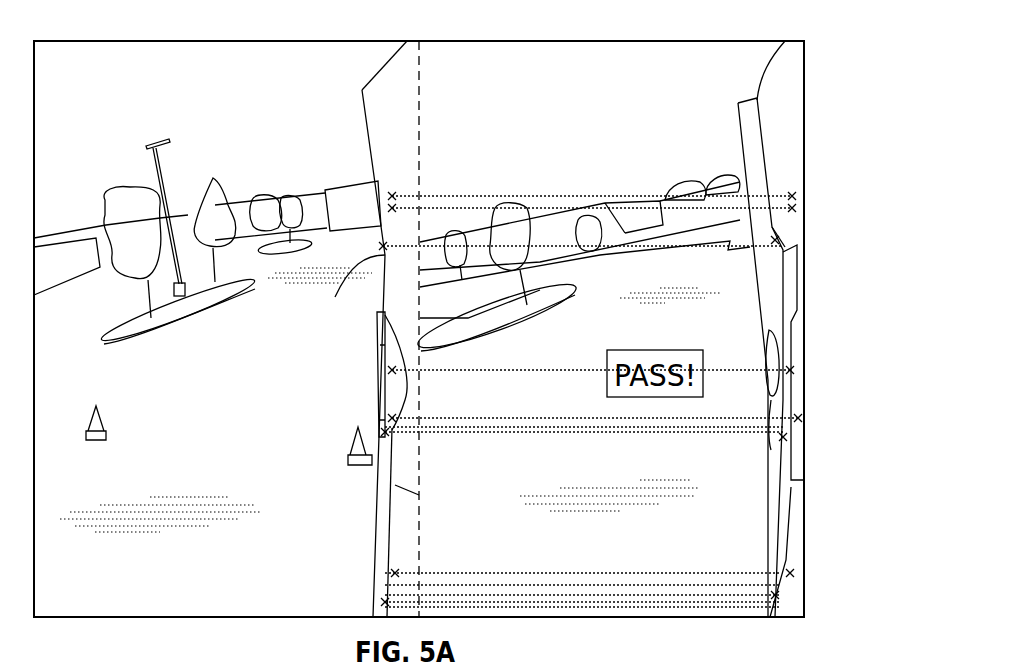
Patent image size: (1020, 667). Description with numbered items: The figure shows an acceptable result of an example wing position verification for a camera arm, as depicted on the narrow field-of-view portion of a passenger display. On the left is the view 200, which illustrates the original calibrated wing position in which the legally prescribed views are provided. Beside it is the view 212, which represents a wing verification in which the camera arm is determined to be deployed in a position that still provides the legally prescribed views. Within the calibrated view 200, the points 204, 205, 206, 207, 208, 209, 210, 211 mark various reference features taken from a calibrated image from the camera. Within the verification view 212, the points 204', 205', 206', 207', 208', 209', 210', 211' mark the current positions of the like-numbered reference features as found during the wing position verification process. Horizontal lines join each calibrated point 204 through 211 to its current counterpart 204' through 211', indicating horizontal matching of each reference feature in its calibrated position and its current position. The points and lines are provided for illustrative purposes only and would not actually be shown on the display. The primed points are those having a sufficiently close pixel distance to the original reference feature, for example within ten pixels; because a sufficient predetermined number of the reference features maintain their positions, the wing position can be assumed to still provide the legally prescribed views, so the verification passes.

The view 200 is at (116, 68).
The view 212 is at (598, 70).
The point 204 is at (353, 178).
The point 205 is at (434, 188).
The point 206 is at (333, 278).
The point 207 is at (354, 355).
The point 208 is at (354, 401).
The point 209 is at (340, 452).
The point 210 is at (352, 555).
The point 211 is at (339, 591).
The point 204' is at (836, 180).
The point 205' is at (836, 221).
The point 206' is at (821, 257).
The point 207' is at (835, 357).
The point 208' is at (843, 401).
The point 209' is at (828, 456).
The point 210' is at (833, 556).
The point 211' is at (822, 590).